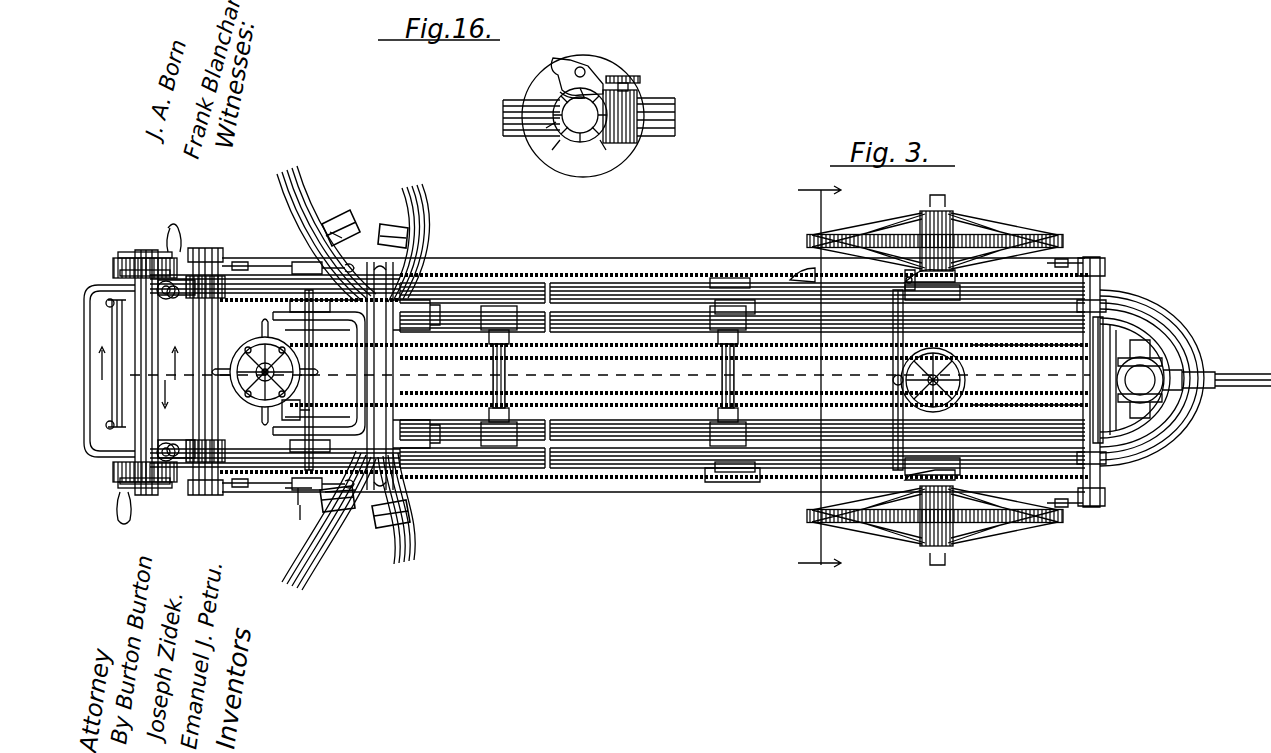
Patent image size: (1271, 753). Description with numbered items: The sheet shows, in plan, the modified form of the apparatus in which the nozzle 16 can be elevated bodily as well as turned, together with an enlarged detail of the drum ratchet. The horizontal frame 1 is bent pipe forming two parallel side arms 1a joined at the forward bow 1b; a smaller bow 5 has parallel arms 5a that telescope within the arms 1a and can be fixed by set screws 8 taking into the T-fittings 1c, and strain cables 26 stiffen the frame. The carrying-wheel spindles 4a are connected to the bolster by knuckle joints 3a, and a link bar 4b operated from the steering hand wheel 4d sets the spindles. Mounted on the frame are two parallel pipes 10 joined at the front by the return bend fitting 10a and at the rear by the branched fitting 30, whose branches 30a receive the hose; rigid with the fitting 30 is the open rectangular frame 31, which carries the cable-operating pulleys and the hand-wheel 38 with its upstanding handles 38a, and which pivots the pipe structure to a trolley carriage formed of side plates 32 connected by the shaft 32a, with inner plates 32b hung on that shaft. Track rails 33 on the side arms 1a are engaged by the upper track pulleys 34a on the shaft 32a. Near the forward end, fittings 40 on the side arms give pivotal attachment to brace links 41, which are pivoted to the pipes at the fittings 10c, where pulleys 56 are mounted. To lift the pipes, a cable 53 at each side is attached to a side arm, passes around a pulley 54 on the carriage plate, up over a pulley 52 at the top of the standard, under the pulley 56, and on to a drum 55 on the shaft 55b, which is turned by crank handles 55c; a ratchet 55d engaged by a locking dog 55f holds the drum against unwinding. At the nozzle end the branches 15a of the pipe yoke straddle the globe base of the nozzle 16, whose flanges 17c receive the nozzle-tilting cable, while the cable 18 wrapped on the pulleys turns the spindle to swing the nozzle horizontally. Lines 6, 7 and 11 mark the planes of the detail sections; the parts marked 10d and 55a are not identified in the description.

In FIG. 3, the horizontal frame structure 1 is at (640, 453).
In FIG. 3, the parallel arms 1a is at (215, 255).
In FIG. 3, the bow 1b is at (1175, 440).
In FIG. 16, the T-fittings 1c is at (625, 130).
In FIG. 3, the T-fittings 1c is at (140, 300).
In FIG. 3, the knuckle joints 3a is at (958, 276).
In FIG. 3, the spindles 4a is at (940, 268).
In FIG. 3, the link bar 4b is at (893, 385).
In FIG. 3, the steering hand wheel 4d is at (960, 392).
In FIG. 3, the second bow 5 is at (100, 297).
In FIG. 3, the parallel arms of the bow 5a is at (135, 270).
In FIG. 3, the section line 6 is at (819, 377).
In FIG. 3, the section line 7 is at (599, 369).
In FIG. 16, the set screws 8 is at (628, 78).
In FIG. 3, the set screws 8 is at (178, 286).
In FIG. 3, the parallel pipes 10 is at (592, 318).
In FIG. 3, the return bend fitting 10a is at (1165, 425).
In FIG. 3, the fittings 10c is at (735, 278).
In FIG. 3, the cross post 10d is at (505, 380).
In FIG. 3, the section line 11 is at (298, 461).
In FIG. 3, the branches of the pipe yoke 15a is at (1103, 300).
In FIG. 3, the nozzle 16 is at (1245, 387).
In FIG. 3, the flanges 17c is at (1160, 360).
In FIG. 3, the cable 18 is at (1014, 352).
In FIG. 3, the strain cables 26 is at (565, 258).
In FIG. 3, the branched fitting 30 is at (395, 366).
In FIG. 3, the branches 30a is at (408, 228).
In FIG. 3, the open rectangular frame 31 is at (272, 310).
In FIG. 3, the side plates 32 is at (295, 262).
In FIG. 3, the shaft 32a is at (313, 385).
In FIG. 3, the inner plate 32b is at (328, 306).
In FIG. 3, the track rails 33 is at (482, 293).
In FIG. 3, the upper track pulleys 34a is at (345, 235).
In FIG. 3, the operating hand-wheel 38 is at (265, 372).
In FIG. 3, the handles 38a is at (285, 350).
In FIG. 3, the fittings 40 is at (1100, 262).
In FIG. 3, the brace links 41 is at (855, 275).
In FIG. 3, the pulley 52 is at (960, 470).
In FIG. 3, the cable 53 is at (660, 277).
In FIG. 3, the pulley 54 is at (340, 222).
In FIG. 3, the drum 55 is at (150, 252).
In FIG. 3, the ratchet wheel 55a is at (172, 298).
In FIG. 3, the shaft 55b is at (175, 228).
In FIG. 3, the crank handles 55c is at (175, 235).
In FIG. 16, the ratchet 55d is at (560, 140).
In FIG. 16, the locking dog 55f is at (575, 75).
In FIG. 3, the pulley 56 is at (728, 482).